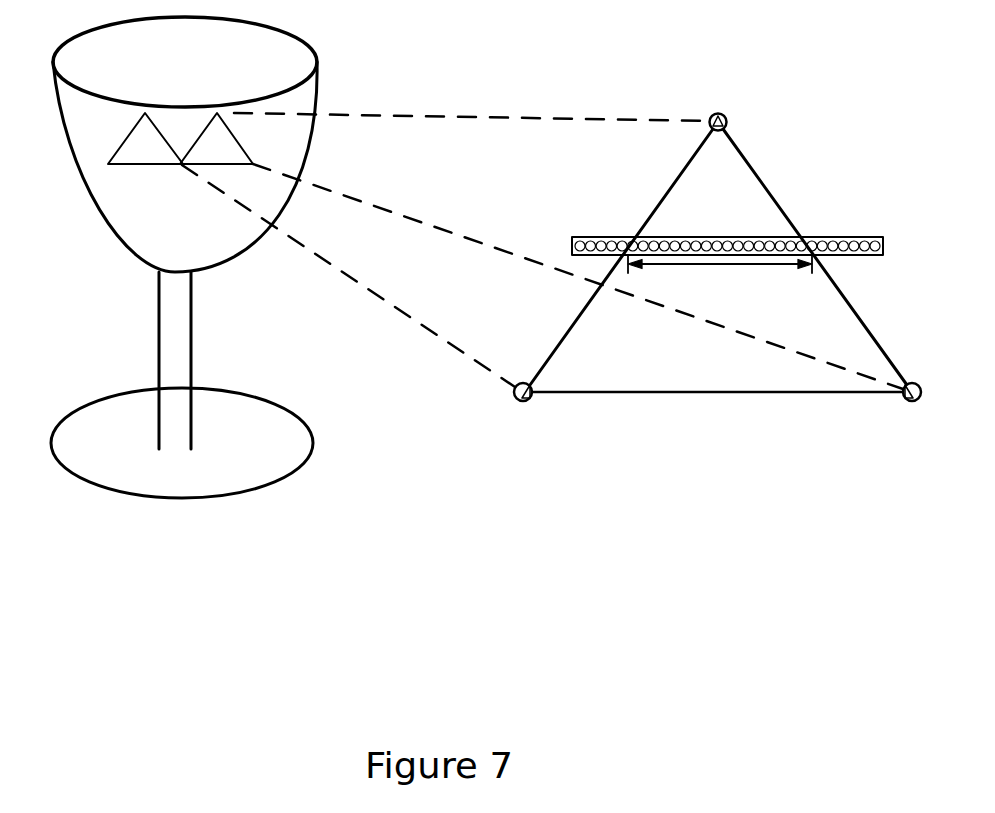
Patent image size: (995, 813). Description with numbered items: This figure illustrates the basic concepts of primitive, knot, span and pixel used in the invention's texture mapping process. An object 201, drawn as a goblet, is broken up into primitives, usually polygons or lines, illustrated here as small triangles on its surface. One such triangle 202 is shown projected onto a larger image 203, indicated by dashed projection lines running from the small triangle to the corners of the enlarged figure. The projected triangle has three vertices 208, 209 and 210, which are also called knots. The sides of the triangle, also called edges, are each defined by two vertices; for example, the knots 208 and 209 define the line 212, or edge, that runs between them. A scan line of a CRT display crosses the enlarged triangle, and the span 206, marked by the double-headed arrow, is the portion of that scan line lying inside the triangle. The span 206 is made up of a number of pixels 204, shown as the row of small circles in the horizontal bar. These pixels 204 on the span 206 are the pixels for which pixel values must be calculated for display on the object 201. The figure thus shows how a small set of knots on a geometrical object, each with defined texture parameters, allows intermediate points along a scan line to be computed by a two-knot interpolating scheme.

The object 201 is at (310, 45).
The triangle 202 is at (240, 148).
The larger image 203 is at (750, 157).
The pixels 204 is at (683, 245).
The span 206 is at (713, 268).
The vertex 208 is at (723, 113).
The vertex 209 is at (523, 402).
The vertex 210 is at (912, 402).
The line 212 is at (672, 182).